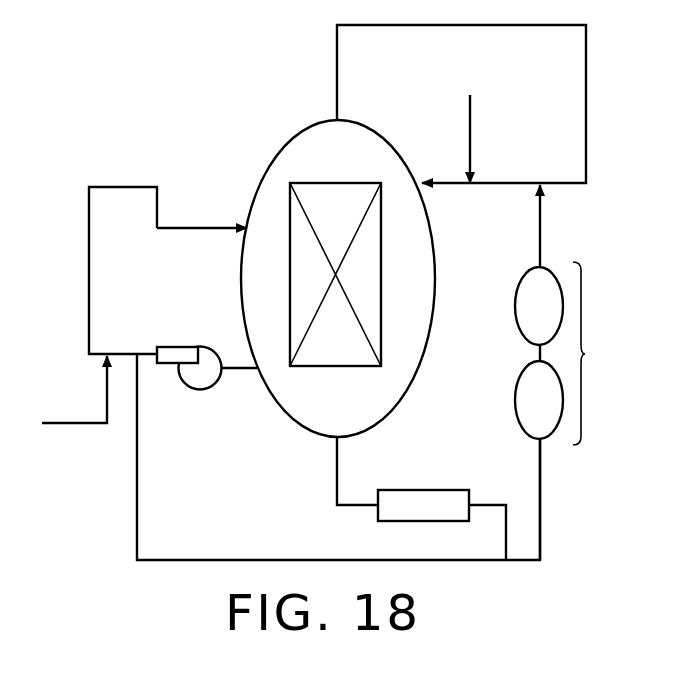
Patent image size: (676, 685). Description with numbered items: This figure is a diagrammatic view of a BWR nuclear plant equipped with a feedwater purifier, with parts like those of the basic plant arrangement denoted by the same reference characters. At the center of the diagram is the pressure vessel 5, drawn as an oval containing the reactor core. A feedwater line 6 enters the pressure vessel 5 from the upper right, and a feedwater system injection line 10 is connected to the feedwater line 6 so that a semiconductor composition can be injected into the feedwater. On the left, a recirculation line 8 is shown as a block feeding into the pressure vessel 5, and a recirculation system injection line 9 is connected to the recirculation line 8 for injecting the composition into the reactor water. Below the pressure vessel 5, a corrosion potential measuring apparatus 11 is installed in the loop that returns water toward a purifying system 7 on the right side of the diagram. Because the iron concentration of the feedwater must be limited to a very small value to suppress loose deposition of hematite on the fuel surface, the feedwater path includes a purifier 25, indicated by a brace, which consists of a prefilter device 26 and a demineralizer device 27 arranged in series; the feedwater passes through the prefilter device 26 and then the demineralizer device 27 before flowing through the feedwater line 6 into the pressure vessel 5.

The pressure vessel 5 is at (288, 142).
The feedwater line 6 is at (586, 75).
The purifying system 7 is at (542, 510).
The recirculation line 8 is at (113, 187).
The recirculation system injection line 9 is at (73, 422).
The feedwater system injection line 10 is at (470, 125).
The corrosion potential measuring apparatus 11 is at (405, 488).
The purifier 25 is at (603, 353).
The prefilter device 26 is at (539, 392).
The demineralizer device 27 is at (539, 265).